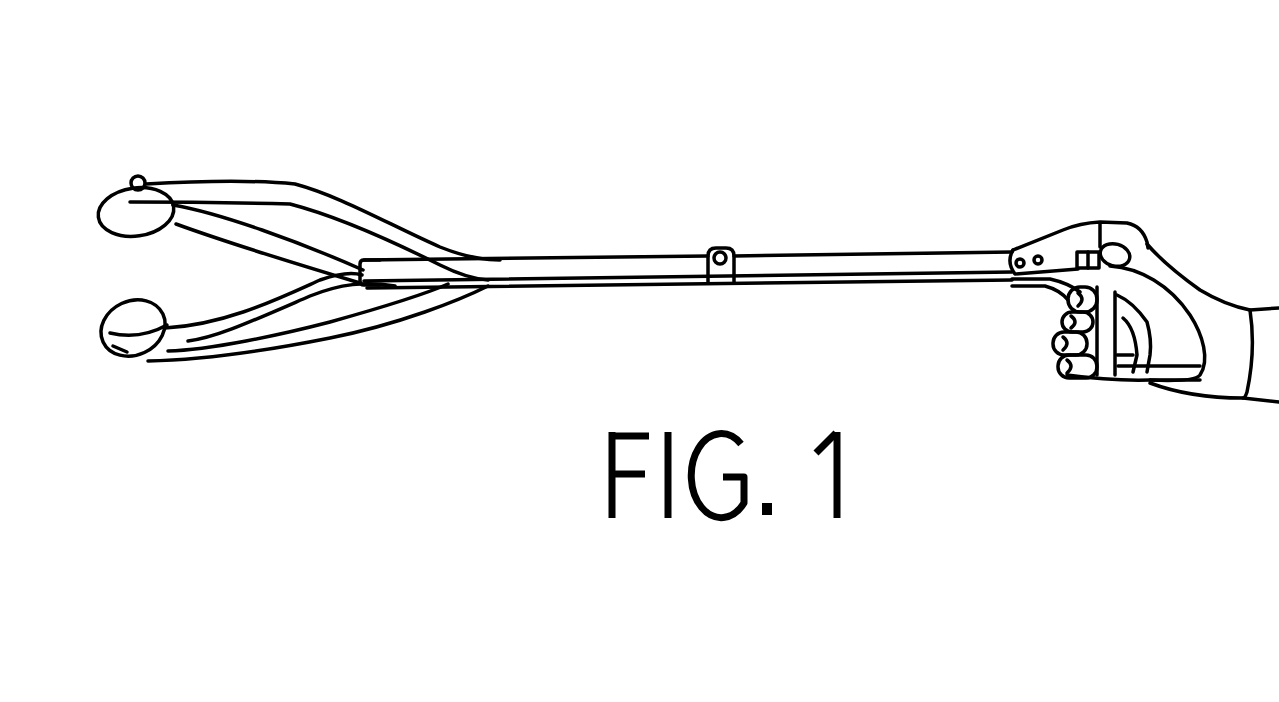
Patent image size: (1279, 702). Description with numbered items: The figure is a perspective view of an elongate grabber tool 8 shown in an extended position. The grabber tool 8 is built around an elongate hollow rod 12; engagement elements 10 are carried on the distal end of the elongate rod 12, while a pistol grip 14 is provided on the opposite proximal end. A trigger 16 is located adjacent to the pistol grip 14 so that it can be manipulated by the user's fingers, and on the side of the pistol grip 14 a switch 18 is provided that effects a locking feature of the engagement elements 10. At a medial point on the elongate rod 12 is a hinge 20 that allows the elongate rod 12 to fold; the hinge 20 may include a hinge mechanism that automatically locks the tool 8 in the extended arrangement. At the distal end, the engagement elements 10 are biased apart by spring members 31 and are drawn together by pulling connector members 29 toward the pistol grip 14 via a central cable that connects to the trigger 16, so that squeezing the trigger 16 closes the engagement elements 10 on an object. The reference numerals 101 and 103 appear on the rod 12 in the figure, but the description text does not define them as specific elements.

The grabber tool 8 is at (510, 218).
The engagement elements 10 is at (107, 353).
The elongate rod 12 is at (603, 280).
The pistol grip 14 is at (1068, 238).
The trigger 16 is at (1103, 382).
The switch 18 is at (1067, 286).
The hinge 20 is at (733, 240).
The connector members 29 is at (280, 238).
The spring members 31 is at (303, 187).
The first shaft section 101 is at (620, 267).
The second shaft section 103 is at (862, 260).